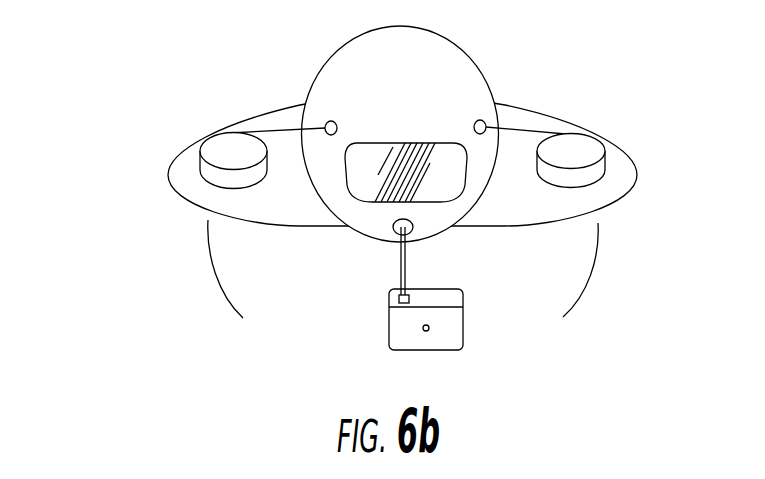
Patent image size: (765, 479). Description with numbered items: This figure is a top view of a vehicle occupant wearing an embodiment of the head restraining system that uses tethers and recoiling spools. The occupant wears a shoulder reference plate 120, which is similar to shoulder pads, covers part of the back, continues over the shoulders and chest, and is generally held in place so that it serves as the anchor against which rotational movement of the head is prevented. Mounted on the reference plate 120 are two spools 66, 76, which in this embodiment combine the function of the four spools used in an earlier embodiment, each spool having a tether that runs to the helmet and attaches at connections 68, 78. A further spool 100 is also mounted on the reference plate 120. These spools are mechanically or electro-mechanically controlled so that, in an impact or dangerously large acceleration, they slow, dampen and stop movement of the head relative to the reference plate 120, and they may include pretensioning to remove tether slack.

The shoulder reference plate 120 is at (200, 197).
The spool 66 is at (200, 148).
The spool 76 is at (593, 138).
The connection 68 is at (331, 120).
The connection 78 is at (479, 120).
The spool 100 is at (389, 338).